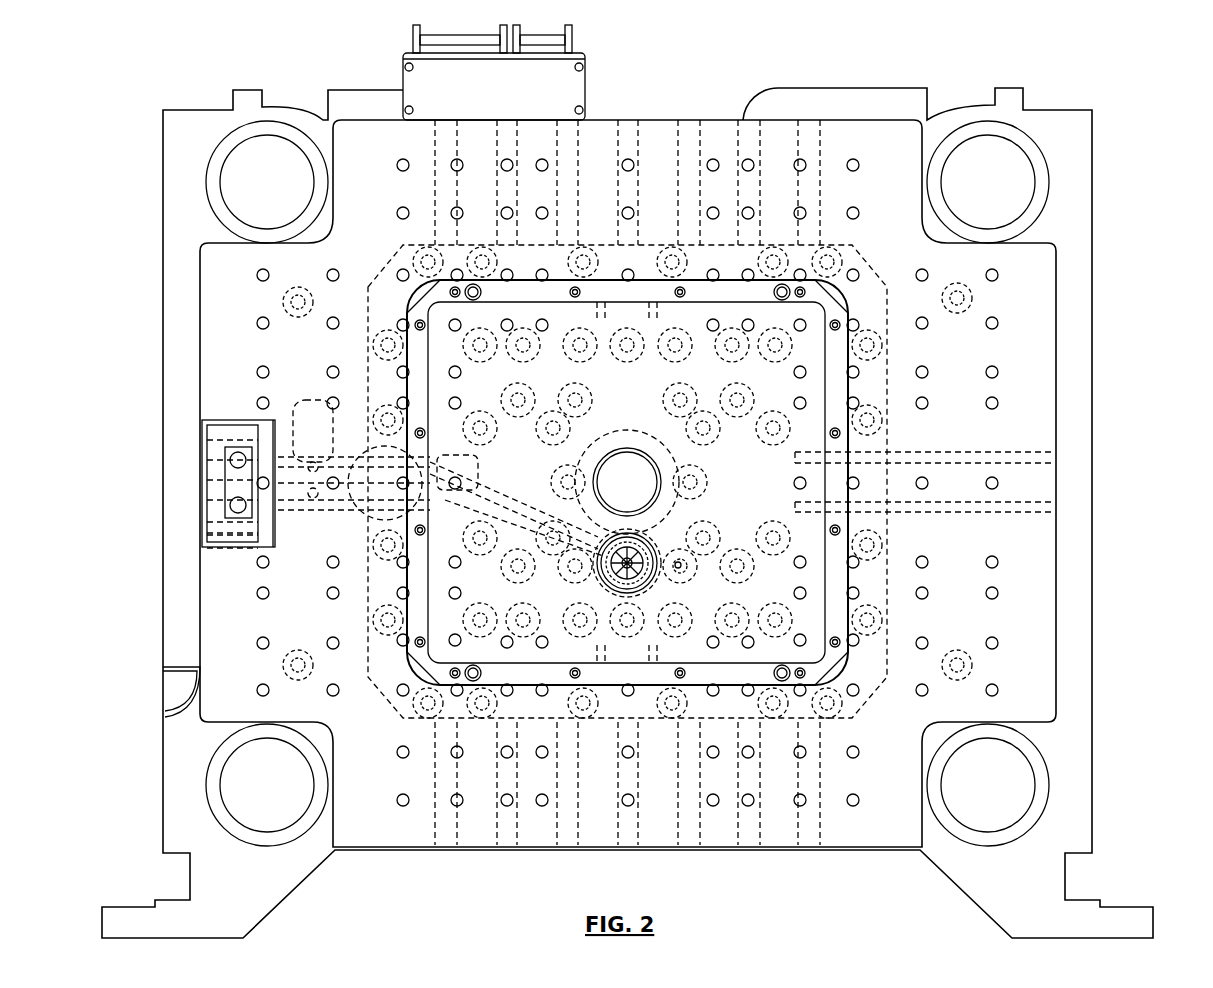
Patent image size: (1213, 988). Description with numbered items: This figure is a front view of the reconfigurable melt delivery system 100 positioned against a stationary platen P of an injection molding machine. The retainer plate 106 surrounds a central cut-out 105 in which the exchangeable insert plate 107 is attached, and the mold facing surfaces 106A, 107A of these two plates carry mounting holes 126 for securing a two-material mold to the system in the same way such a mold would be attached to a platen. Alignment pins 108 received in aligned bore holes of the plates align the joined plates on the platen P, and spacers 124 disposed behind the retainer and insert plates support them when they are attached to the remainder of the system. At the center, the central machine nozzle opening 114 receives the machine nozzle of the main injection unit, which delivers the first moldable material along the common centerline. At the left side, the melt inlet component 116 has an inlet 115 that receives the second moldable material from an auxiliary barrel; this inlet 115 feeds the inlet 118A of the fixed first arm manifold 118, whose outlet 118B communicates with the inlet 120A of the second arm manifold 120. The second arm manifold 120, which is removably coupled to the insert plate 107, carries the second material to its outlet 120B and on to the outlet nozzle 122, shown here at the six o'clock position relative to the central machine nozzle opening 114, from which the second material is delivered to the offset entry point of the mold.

The platen P is at (1097, 150).
The reconfigurable melt delivery system 100 is at (1062, 340).
The cut-out 105 is at (576, 588).
The retainer plate 106 is at (1007, 537).
The mold facing surface 106A is at (604, 476).
The insert plate 107 is at (400, 520).
The mold facing surface 107A is at (741, 482).
The alignment pins 108 is at (972, 302).
The central machine nozzle opening 114 is at (627, 482).
The inlet 115 is at (200, 482).
The melt inlet component 116 is at (197, 517).
The first arm manifold 118 is at (317, 453).
The inlet 118A is at (257, 535).
The outlet 118B is at (250, 552).
The second arm manifold 120 is at (497, 545).
The inlet 120A is at (400, 433).
The outlet 120B is at (603, 583).
The outlet nozzle 122 is at (657, 570).
The spacers 124 is at (668, 250).
The mounting holes 126 is at (858, 160).